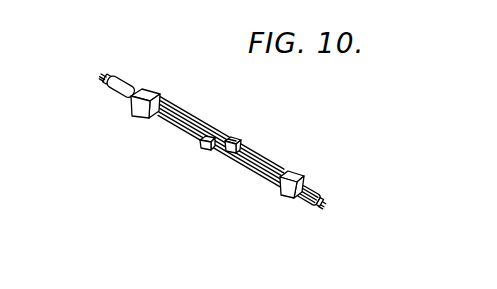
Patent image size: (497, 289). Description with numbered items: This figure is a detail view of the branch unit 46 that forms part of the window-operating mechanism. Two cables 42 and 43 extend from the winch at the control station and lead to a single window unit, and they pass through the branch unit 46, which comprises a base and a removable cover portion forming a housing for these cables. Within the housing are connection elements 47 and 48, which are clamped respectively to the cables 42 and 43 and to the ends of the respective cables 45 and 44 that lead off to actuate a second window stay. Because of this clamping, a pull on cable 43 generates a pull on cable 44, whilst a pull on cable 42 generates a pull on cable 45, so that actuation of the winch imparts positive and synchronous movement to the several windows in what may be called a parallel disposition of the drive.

The cable 42 is at (102, 72).
The cable 43 is at (102, 79).
The cable 44 is at (111, 88).
The cable 45 is at (110, 76).
The branch unit 46 is at (270, 159).
The connection element 47 is at (238, 142).
The connection element 48 is at (210, 148).